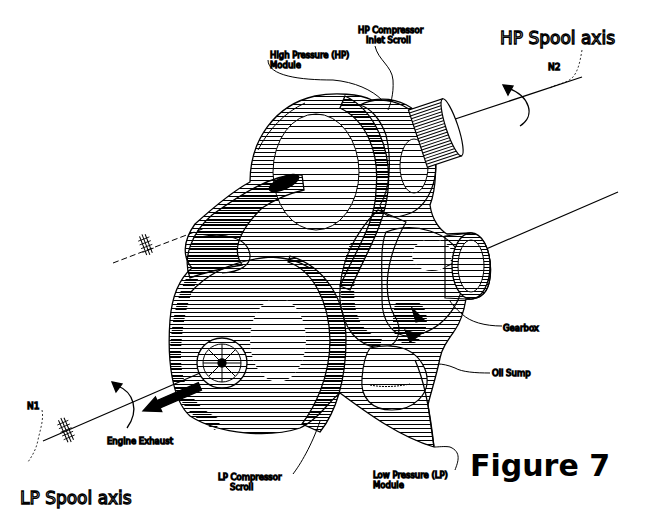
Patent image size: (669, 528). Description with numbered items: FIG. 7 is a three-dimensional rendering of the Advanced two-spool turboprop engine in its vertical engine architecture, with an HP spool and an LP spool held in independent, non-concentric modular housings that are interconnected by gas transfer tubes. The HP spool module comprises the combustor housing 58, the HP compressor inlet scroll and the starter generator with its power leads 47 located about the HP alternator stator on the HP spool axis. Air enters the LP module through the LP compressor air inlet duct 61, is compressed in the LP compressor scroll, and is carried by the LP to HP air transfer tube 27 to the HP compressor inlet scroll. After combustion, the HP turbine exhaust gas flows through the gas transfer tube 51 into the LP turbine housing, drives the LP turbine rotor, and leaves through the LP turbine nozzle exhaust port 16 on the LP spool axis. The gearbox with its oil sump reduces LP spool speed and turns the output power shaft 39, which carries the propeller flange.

The LP turbine nozzle exhaust port 16 is at (200, 314).
The LP to HP air transfer tube 27 is at (413, 202).
The output power shaft 39 is at (490, 249).
The power leads 47 is at (412, 79).
The gas transfer tube 51 is at (215, 212).
The combustor housing 58 is at (272, 133).
The LP compressor air inlet duct 61 is at (415, 322).